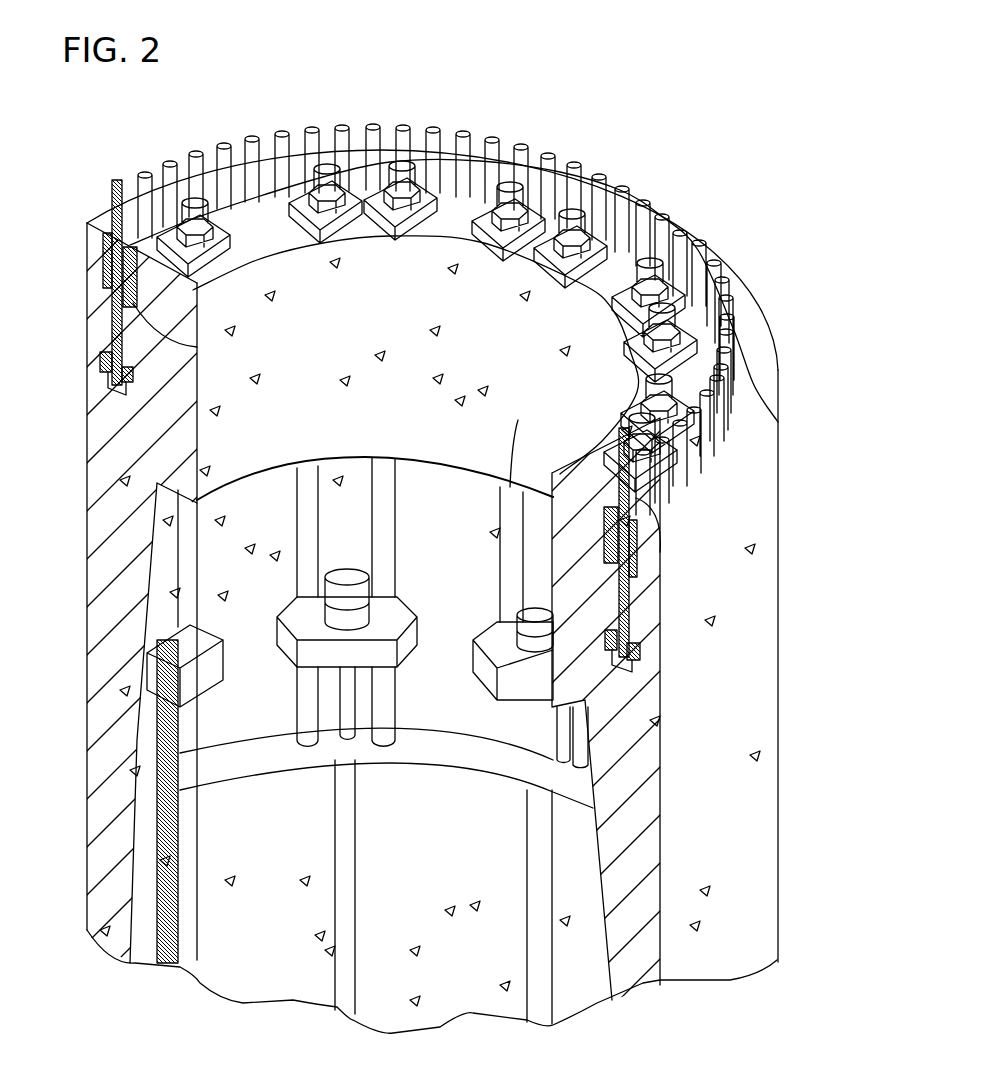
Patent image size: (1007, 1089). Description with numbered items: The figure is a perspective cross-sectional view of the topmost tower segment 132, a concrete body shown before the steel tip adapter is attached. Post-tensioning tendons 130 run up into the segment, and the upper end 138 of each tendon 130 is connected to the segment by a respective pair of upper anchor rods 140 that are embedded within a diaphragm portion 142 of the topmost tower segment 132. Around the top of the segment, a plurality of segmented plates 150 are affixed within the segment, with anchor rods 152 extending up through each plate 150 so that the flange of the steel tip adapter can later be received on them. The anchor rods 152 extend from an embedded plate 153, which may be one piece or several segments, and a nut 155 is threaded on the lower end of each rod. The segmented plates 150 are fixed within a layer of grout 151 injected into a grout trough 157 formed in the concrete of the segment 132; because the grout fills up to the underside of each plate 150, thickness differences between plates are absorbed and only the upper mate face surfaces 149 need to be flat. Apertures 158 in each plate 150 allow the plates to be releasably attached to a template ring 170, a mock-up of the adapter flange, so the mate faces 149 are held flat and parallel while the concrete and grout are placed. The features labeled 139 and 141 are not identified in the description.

The post-tensioning tendons 130 is at (350, 838).
The topmost tower segment 132 is at (753, 613).
The upper end of tendon 138 is at (343, 587).
The anchor rod 139 is at (303, 522).
The upper anchor rods 140 is at (518, 488).
The anchor rod 141 is at (387, 503).
The diaphragm portion 142 is at (443, 341).
The mate face surface 149 is at (212, 203).
The segmented plates 150 is at (270, 190).
The grout layer 151 is at (103, 245).
The anchor rods 152 is at (112, 195).
The embedded plate 153 is at (100, 360).
The nut 155 is at (110, 385).
The grout trough 157 is at (170, 343).
The apertures 158 is at (653, 510).
The template ring 170 is at (208, 650).